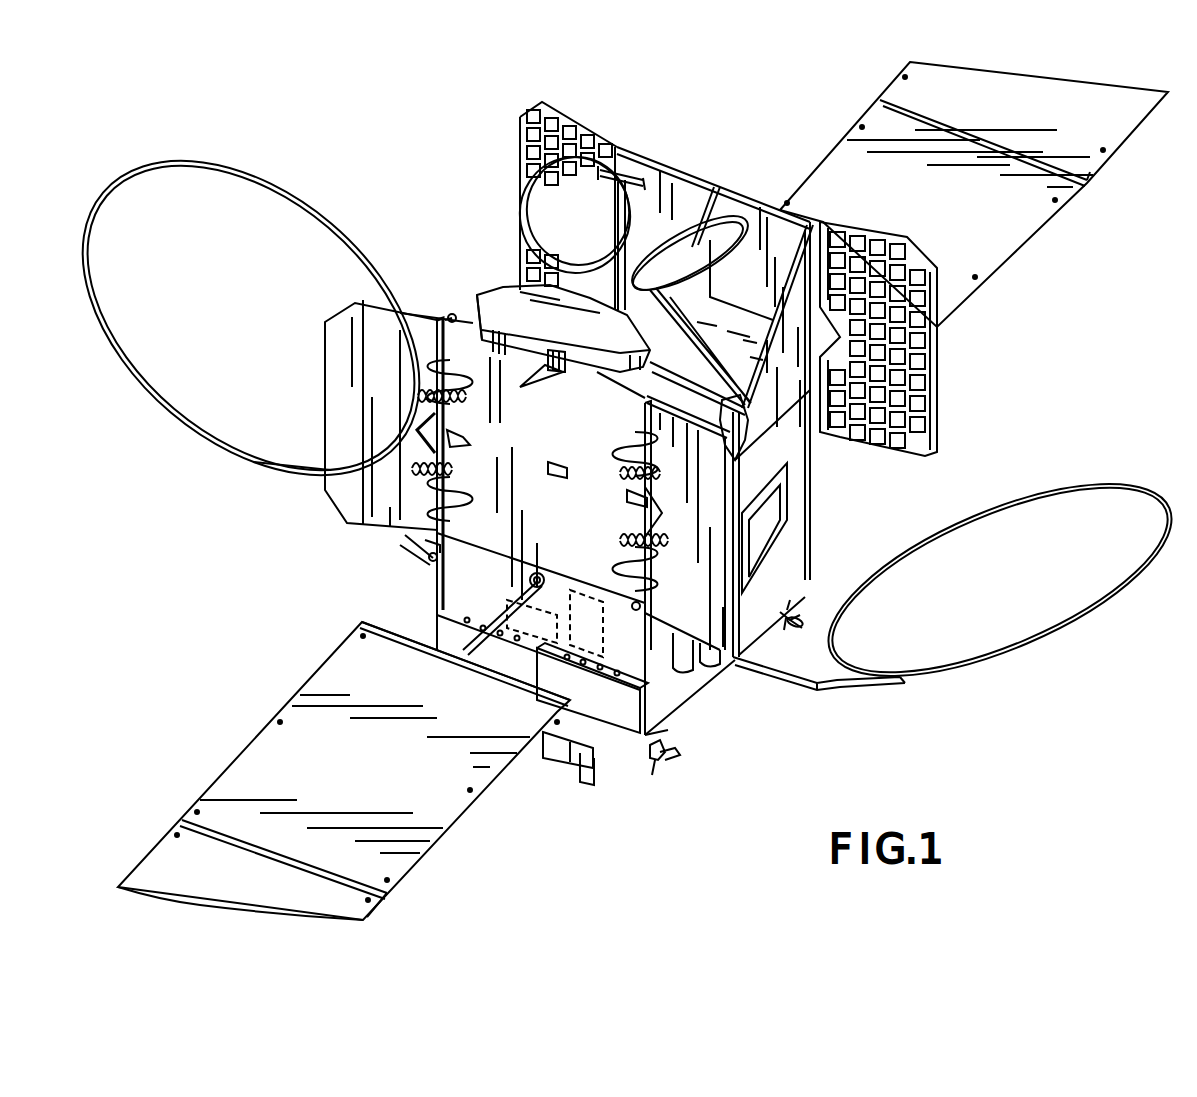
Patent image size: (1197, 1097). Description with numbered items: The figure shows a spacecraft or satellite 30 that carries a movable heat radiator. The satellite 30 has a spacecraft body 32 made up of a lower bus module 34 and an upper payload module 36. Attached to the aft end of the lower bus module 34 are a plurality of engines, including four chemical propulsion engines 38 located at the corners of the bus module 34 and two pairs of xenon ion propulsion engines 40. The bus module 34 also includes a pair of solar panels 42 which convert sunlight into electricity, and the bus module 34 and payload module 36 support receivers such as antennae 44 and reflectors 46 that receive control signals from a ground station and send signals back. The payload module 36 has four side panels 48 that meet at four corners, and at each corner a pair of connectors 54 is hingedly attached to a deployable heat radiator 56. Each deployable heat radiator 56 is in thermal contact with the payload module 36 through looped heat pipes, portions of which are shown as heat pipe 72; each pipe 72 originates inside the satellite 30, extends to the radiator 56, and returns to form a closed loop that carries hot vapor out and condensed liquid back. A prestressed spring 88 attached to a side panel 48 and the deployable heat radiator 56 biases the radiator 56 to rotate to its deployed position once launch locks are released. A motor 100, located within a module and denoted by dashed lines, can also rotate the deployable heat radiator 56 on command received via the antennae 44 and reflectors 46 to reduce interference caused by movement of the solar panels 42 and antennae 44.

The spacecraft or satellite 30 is at (366, 566).
The spacecraft body 32 is at (523, 524).
The lower bus module 34 is at (683, 695).
The upper payload module 36 is at (815, 452).
The chemical propulsion engines 38 is at (795, 618).
The xenon ion propulsion engines 40 is at (520, 750).
The solar panels 42 is at (643, 491).
The antennae 44 is at (609, 406).
The reflectors 46 is at (735, 152).
The side panels 48 is at (681, 190).
The connectors 54 is at (452, 316).
The deployable heat radiator 56 is at (525, 243).
The looped heat pipe 72 is at (430, 368).
The spring 88 is at (453, 390).
The motor 100 is at (685, 697).